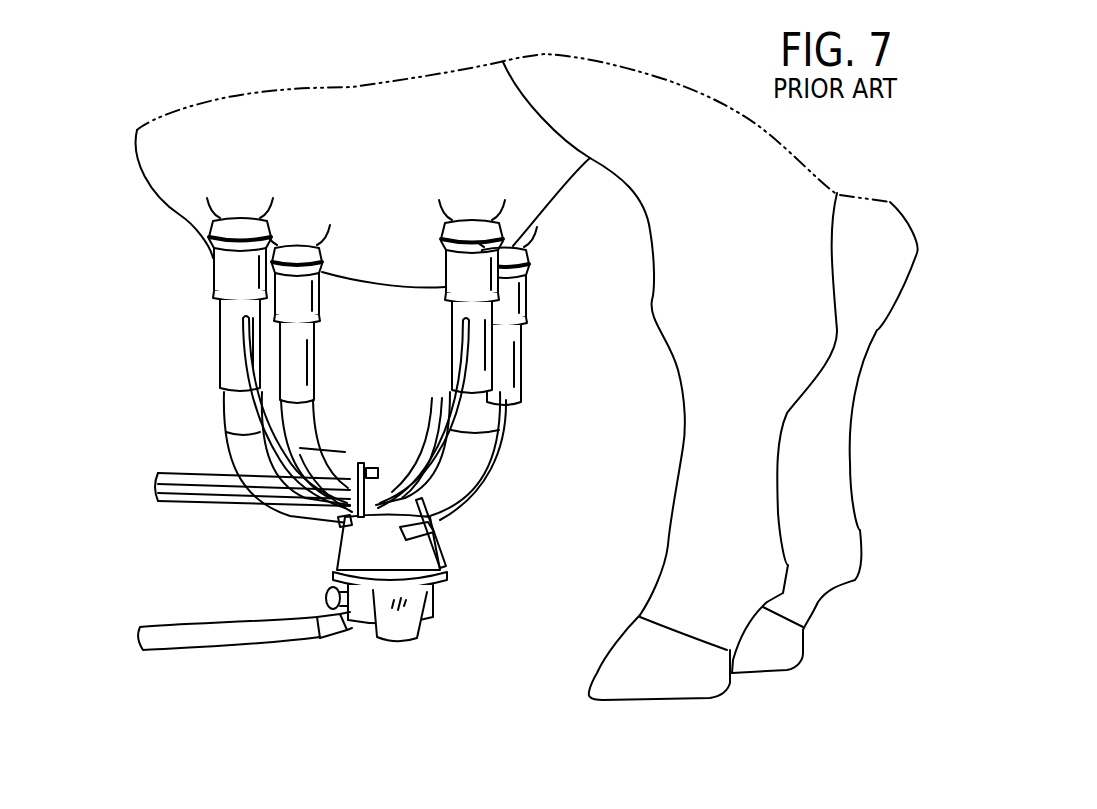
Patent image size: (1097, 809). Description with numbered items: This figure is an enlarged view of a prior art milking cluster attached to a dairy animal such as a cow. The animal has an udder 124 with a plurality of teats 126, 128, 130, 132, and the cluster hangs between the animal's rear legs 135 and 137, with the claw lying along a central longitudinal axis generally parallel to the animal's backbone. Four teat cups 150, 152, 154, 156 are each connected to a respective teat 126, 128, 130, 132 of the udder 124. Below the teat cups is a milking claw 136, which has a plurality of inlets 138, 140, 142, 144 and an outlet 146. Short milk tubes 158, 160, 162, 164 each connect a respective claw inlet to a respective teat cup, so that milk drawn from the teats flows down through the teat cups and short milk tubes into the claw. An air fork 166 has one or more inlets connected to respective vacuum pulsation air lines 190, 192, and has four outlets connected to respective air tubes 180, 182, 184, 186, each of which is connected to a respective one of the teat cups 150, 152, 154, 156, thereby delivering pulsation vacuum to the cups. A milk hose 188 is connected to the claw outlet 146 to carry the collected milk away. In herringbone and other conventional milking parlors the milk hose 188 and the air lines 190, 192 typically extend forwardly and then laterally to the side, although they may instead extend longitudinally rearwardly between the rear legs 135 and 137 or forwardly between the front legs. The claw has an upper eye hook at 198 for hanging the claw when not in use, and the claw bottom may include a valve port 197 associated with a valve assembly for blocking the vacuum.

The udder 124 is at (162, 153).
The teat 126 is at (513, 237).
The teat 128 is at (475, 207).
The teat 130 is at (300, 237).
The teat 132 is at (240, 207).
The rear leg 135 is at (850, 465).
The milking claw 136 is at (437, 580).
The rear leg 137 is at (683, 562).
The inlet 138 is at (410, 530).
The inlet 140 is at (430, 558).
The inlet 142 is at (367, 513).
The inlet 144 is at (340, 540).
The outlet 146 is at (333, 627).
The teat cup 150 is at (520, 293).
The teat cup 152 is at (458, 270).
The teat cup 154 is at (322, 290).
The teat cup 156 is at (220, 274).
The short milk tube 158 is at (497, 448).
The short milk tube 160 is at (463, 467).
The short milk tube 162 is at (255, 380).
The short milk tube 164 is at (240, 430).
The air fork 166 is at (367, 466).
The air tube 180 is at (427, 437).
The air tube 182 is at (453, 397).
The air tube 184 is at (317, 437).
The air tube 186 is at (310, 497).
The milk hose 188 is at (230, 635).
The vacuum pulsation air line 190 is at (175, 474).
The vacuum pulsation air line 192 is at (175, 498).
The valve port 197 is at (323, 603).
The upper eye hook 198 is at (300, 451).